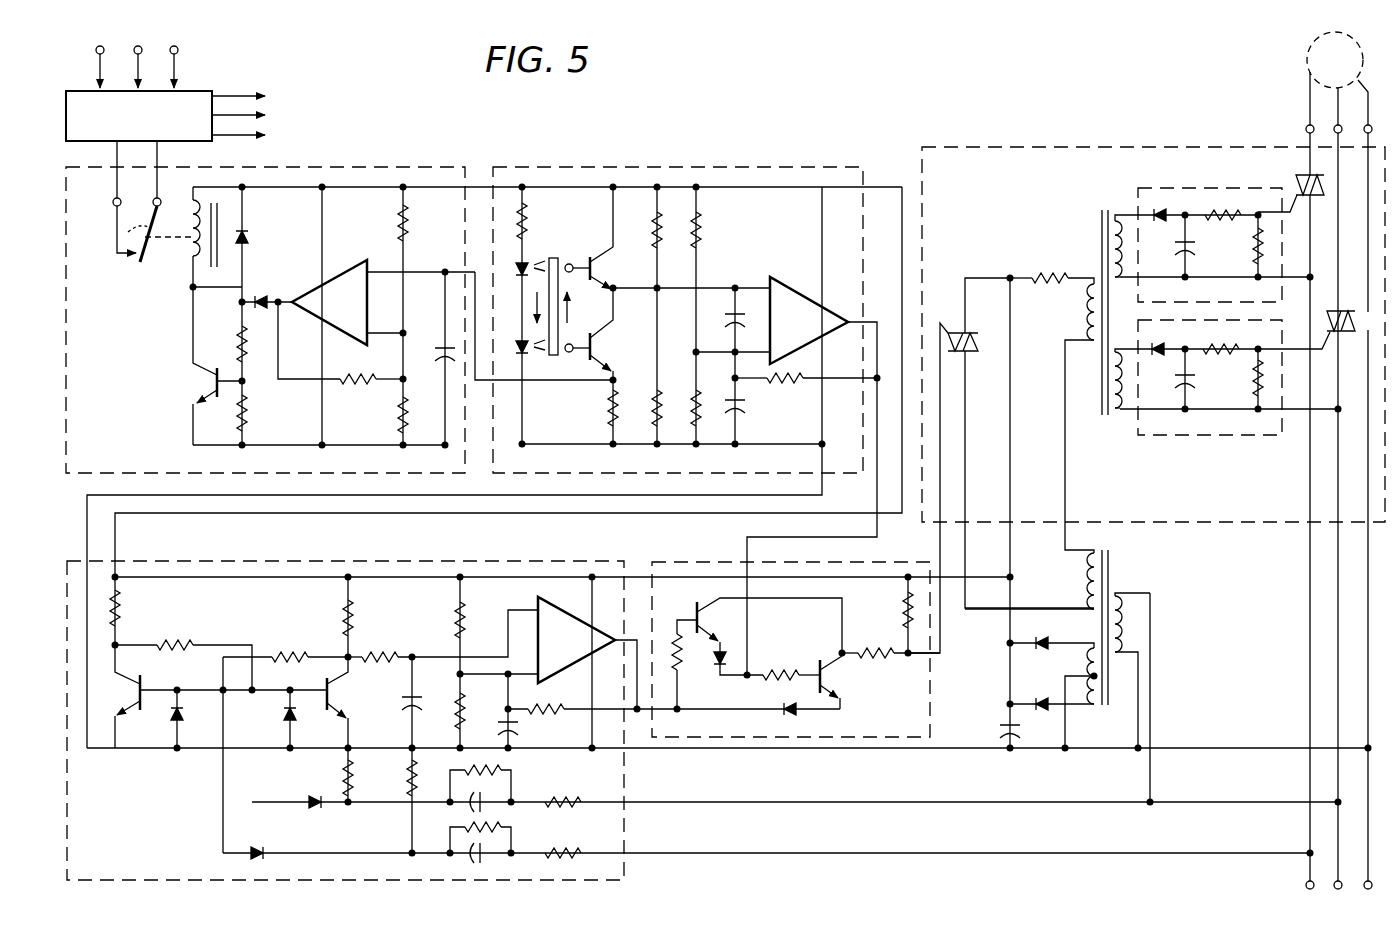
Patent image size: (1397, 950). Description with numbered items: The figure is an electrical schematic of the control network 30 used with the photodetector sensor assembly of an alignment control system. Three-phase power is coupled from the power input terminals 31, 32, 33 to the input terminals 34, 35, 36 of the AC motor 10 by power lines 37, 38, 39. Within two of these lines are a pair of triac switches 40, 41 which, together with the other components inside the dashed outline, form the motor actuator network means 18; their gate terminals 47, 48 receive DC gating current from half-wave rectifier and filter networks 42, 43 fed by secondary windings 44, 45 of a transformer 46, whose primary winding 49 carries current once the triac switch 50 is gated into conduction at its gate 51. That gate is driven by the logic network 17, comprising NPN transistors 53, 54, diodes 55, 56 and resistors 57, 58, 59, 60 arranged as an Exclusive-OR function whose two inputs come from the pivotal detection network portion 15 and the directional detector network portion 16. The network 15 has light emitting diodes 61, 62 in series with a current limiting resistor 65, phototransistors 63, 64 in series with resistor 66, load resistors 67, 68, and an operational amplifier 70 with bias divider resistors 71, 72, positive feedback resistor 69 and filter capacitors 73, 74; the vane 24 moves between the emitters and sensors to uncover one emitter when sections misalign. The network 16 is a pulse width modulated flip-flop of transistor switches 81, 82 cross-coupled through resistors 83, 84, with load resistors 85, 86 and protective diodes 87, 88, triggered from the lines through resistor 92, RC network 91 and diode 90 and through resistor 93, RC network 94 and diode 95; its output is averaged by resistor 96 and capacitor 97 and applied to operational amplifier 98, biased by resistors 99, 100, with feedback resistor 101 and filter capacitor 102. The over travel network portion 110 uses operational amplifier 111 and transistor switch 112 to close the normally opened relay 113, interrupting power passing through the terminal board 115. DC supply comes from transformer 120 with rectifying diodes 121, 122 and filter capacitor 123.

The AC motor 10 is at (1318, 50).
The pivotal detection network portion 15 is at (653, 172).
The directional detector network portion 16 is at (300, 568).
The logic network 17 is at (707, 568).
The motor actuator network means 18 is at (1010, 170).
The vane 24 is at (559, 343).
The control network 30 is at (890, 92).
The power input terminal 31 is at (1304, 891).
The power input terminal 32 is at (1334, 890).
The power input terminal 33 is at (1366, 890).
The motor input terminal 34 is at (1305, 129).
The motor input terminal 35 is at (1366, 122).
The motor input terminal 36 is at (1338, 112).
The power line 37 is at (1310, 597).
The power line 38 is at (1338, 632).
The power line 39 is at (1368, 670).
The triac switch 40 is at (1296, 178).
The triac switch 41 is at (1326, 318).
The half-wave rectifier and filter network 42 is at (1203, 195).
The half-wave rectifier and filter network 43 is at (1218, 432).
The secondary winding 44 is at (1120, 213).
The secondary winding 45 is at (1122, 411).
The transformer 46 is at (1088, 252).
The gate terminal 47 is at (1264, 232).
The gate terminal 48 is at (1322, 350).
The primary winding 49 is at (1082, 300).
The triac switch 50 is at (980, 343).
The gate 51 is at (946, 331).
The NPN transistor 53 is at (697, 610).
The NPN transistor 54 is at (828, 662).
The diode 55 is at (716, 662).
The diode 56 is at (784, 712).
The resistor 57 is at (672, 645).
The resistor 58 is at (790, 672).
The resistor 59 is at (897, 650).
The resistor 60 is at (905, 612).
The light emitting diode 61 is at (516, 265).
The light emitting diode 62 is at (517, 352).
The phototransistor 63 is at (588, 260).
The phototransistor 64 is at (596, 350).
The current limiting resistor 65 is at (527, 223).
The resistor 66 is at (608, 410).
The load resistor 67 is at (655, 238).
The load resistor 68 is at (652, 420).
The resistor 69 is at (788, 382).
The operational amplifier 70 is at (812, 332).
The resistor 71 is at (702, 234).
The resistor 72 is at (700, 420).
The capacitor 73 is at (740, 312).
The capacitor 74 is at (745, 405).
The transistor switch 81 is at (128, 682).
The transistor switch 82 is at (342, 690).
The resistor 83 is at (303, 655).
The resistor 84 is at (172, 645).
The load resistor 85 is at (120, 612).
The load resistor 86 is at (345, 620).
The diode 87 is at (170, 720).
The diode 88 is at (287, 722).
The reverse-biased diode 90 is at (313, 806).
The RC network 91 is at (455, 803).
The resistor 92 is at (574, 802).
The resistor 93 is at (574, 853).
The RC network 94 is at (500, 835).
The reverse biased diode 95 is at (258, 846).
The resistor 96 is at (375, 655).
The capacitor 97 is at (408, 707).
The operational amplifier 98 is at (578, 651).
The resistor 99 is at (455, 610).
The resistor 100 is at (456, 716).
The resistor 101 is at (571, 713).
The filter capacitor 102 is at (511, 735).
The over travel network portion 110 is at (345, 205).
The operational amplifier 111 is at (350, 309).
The transistor switch 112 is at (193, 368).
The normally opened relay 113 is at (167, 267).
The terminal board 115 is at (154, 128).
The transformer 120 is at (1118, 578).
The diode 121 is at (1058, 626).
The diode 122 is at (1043, 702).
The filter capacitor 123 is at (1005, 728).